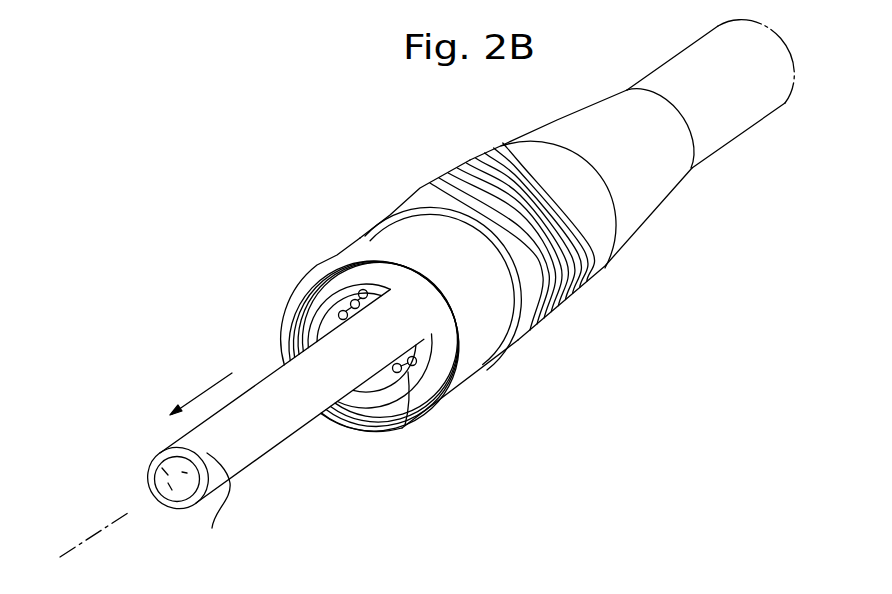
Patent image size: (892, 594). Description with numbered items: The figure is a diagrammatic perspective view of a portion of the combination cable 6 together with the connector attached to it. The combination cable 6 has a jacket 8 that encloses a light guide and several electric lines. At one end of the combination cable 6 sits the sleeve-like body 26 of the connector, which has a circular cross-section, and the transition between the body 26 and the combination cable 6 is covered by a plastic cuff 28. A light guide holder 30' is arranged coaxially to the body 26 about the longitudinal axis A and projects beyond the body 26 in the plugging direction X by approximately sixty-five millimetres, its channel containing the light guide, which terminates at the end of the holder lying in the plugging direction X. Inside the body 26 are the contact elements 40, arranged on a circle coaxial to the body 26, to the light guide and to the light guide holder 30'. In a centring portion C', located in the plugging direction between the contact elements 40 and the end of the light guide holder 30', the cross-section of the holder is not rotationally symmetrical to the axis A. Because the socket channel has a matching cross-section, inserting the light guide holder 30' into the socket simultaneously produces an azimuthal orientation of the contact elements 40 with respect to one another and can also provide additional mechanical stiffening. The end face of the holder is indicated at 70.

The combination cable 6 is at (715, 120).
The jacket 8 is at (780, 103).
The sleeve-like body 26 is at (483, 355).
The plastic cuff 28 is at (645, 190).
The light guide holder 30' is at (292, 396).
The contact elements 40 is at (400, 372).
The cable end 70 is at (166, 503).
The longitudinal axis A is at (90, 535).
The centring portion C' is at (223, 503).
The plugging direction X is at (232, 373).